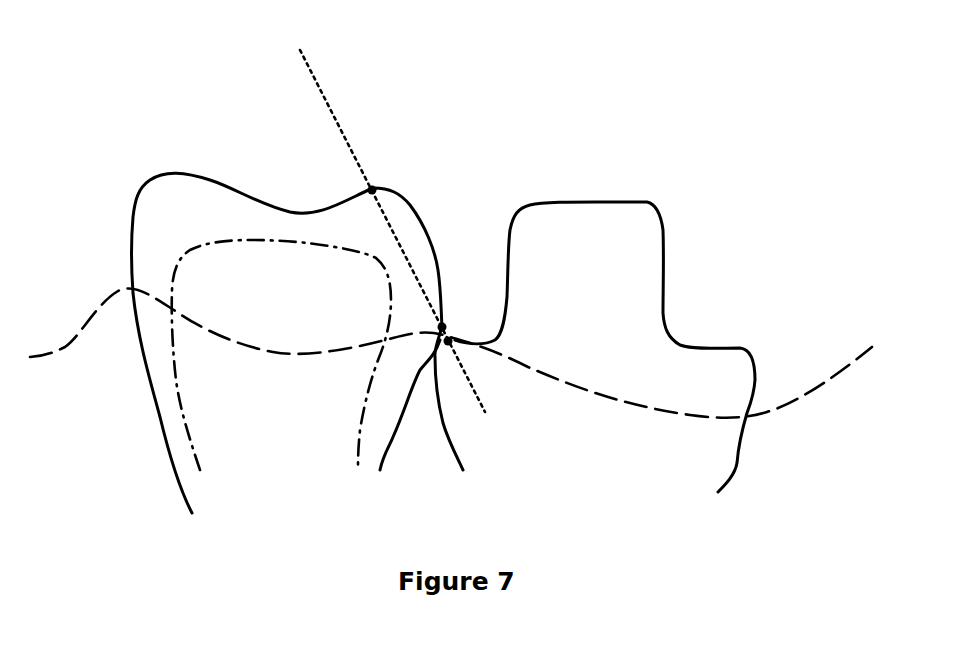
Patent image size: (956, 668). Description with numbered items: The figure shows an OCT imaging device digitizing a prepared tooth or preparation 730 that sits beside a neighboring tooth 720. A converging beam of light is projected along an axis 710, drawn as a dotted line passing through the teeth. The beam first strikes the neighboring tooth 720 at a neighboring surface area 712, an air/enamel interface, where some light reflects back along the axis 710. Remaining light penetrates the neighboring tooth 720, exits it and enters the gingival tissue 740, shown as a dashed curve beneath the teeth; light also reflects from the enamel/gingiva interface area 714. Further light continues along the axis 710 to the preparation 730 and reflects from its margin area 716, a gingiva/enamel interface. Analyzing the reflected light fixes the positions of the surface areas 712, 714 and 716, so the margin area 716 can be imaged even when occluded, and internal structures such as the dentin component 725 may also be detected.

The axis 710 is at (313, 62).
The neighboring surface area 712 is at (380, 184).
The interface area 714 is at (447, 320).
The margin area 716 is at (453, 344).
The neighboring tooth 720 is at (168, 200).
The dentin component 725 is at (245, 267).
The preparation 730 is at (577, 213).
The gingival tissue 740 is at (72, 338).